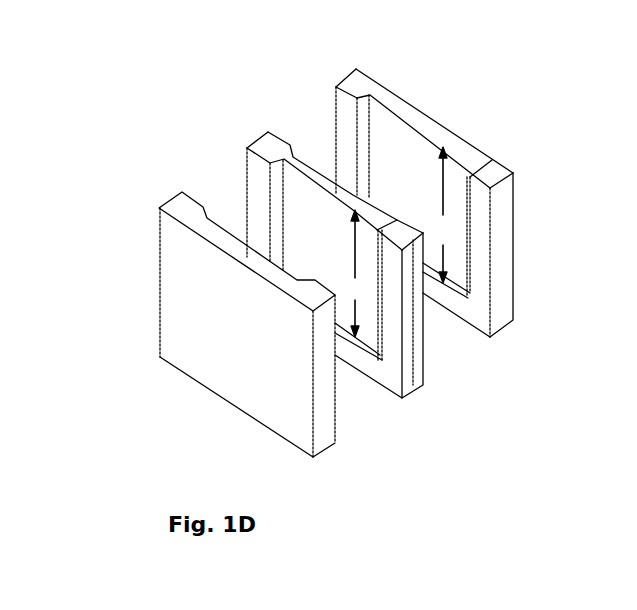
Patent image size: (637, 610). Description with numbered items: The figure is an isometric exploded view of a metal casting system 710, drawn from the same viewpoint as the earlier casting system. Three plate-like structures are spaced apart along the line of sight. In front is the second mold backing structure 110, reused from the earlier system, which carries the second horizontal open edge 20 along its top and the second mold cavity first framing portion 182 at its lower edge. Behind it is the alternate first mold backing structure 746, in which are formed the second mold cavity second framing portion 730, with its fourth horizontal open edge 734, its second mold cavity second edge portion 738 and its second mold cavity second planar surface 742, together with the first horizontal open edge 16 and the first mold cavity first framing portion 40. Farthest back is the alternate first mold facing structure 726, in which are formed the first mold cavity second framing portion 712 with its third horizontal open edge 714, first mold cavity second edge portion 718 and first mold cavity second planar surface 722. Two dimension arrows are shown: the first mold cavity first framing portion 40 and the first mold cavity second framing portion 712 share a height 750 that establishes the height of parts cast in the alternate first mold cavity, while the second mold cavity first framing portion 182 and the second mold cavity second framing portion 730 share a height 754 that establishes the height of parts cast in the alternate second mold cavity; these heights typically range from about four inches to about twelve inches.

The first horizontal open edge 16 is at (355, 197).
The second horizontal open edge 20 is at (201, 343).
The first mold cavity first framing portion 40 is at (423, 372).
The second mold backing structure 110 is at (160, 268).
The second mold cavity first framing portion 182 is at (340, 430).
The metal casting system 710 is at (449, 253).
The first mold cavity second framing portion 712 is at (490, 283).
The third horizontal open edge 714 is at (397, 113).
The first mold cavity second edge portion 718 is at (371, 139).
The first mold cavity second planar surface 722 is at (397, 186).
The alternate first mold facing structure 726 is at (462, 138).
The second mold cavity second framing portion 730 is at (309, 246).
The fourth horizontal open edge 734 is at (310, 190).
The second mold cavity second edge portion 738 is at (284, 216).
The second mold cavity second planar surface 742 is at (346, 226).
The alternate first mold backing structure 746 is at (248, 188).
The height 750 is at (444, 215).
The height 754 is at (356, 273).